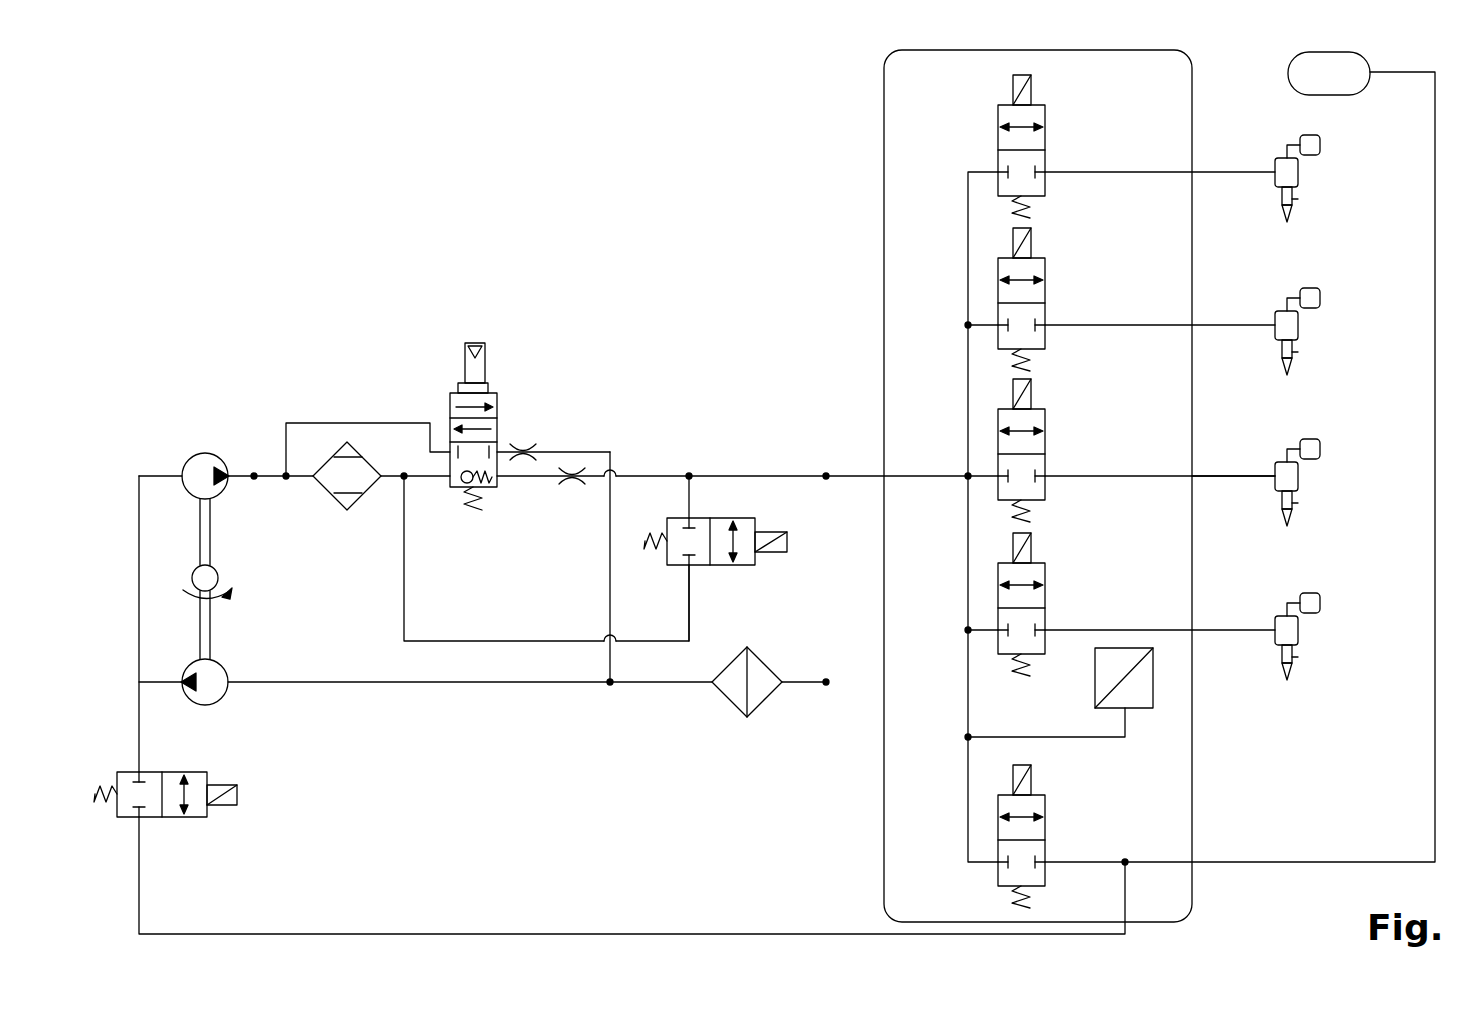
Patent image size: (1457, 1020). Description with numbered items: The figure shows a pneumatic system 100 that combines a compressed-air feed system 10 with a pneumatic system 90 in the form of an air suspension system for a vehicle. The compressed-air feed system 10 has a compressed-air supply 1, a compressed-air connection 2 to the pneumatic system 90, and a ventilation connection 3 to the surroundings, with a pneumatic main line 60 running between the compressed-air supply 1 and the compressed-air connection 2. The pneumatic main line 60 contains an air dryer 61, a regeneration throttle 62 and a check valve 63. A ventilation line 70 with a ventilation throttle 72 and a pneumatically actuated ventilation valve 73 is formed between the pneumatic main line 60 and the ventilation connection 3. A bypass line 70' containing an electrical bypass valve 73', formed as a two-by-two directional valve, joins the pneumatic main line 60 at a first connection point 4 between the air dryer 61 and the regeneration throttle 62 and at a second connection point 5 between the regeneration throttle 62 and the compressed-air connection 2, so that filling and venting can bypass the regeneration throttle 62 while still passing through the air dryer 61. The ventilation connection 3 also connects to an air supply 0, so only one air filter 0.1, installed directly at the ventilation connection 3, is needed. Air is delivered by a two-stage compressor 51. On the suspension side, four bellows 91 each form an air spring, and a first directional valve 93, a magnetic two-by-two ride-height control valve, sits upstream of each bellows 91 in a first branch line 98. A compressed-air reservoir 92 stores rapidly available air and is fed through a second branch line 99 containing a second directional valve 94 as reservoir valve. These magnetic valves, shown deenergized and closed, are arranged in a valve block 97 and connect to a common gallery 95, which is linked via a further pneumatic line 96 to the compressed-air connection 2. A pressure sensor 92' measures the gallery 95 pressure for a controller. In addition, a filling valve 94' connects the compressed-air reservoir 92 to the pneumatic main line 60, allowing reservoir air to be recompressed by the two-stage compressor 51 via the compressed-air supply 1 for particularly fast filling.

The pneumatic system 100 is at (355, 175).
The compressed-air feed system 10 is at (195, 393).
The two-stage compressor 51 is at (192, 579).
The compressed-air supply 1 is at (255, 470).
The compressed-air connection 2 is at (826, 470).
The ventilation connection 3 is at (611, 689).
The first connection point 4 is at (404, 468).
The second connection point 5 is at (689, 470).
The air supply 0 is at (826, 676).
The air filter 0.1 is at (771, 706).
The pneumatic main line 60 is at (289, 482).
The air dryer 61 is at (322, 492).
The regeneration throttle 62 is at (573, 487).
The check valve 63 is at (459, 490).
The ventilation line 70 is at (546, 567).
The bypass line 70' is at (732, 603).
The ventilation throttle 72 is at (523, 443).
The ventilation valve 73 is at (458, 452).
The bypass valve 73' is at (715, 494).
The pneumatic system 90 is at (790, 128).
The bellows 91 is at (1300, 170).
The compressed-air reservoir 92 is at (1357, 96).
The pressure sensor 92' is at (1070, 718).
The first directional valve 93 is at (1045, 112).
The second directional valve 94 is at (1064, 836).
The filling valve 94' is at (165, 836).
The gallery 95 is at (966, 215).
The further pneumatic line 96 is at (966, 470).
The valve block 97 is at (882, 302).
The first branch line 98 is at (1235, 170).
The second branch line 99 is at (1322, 861).